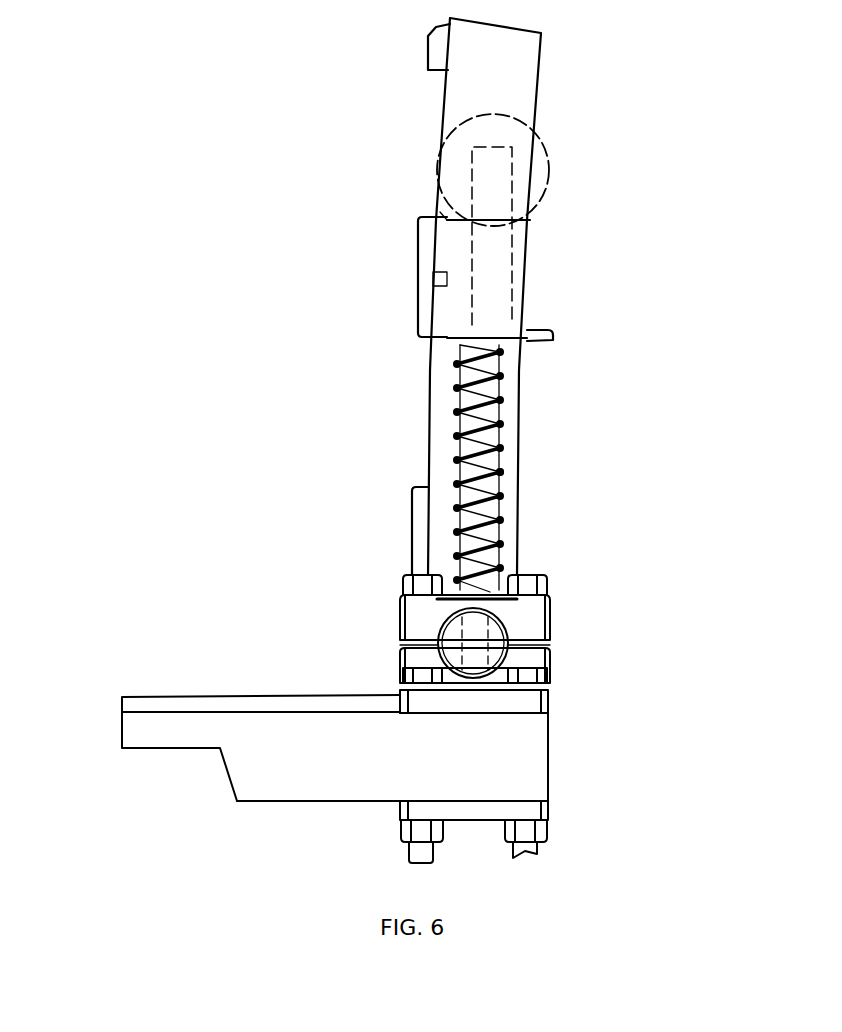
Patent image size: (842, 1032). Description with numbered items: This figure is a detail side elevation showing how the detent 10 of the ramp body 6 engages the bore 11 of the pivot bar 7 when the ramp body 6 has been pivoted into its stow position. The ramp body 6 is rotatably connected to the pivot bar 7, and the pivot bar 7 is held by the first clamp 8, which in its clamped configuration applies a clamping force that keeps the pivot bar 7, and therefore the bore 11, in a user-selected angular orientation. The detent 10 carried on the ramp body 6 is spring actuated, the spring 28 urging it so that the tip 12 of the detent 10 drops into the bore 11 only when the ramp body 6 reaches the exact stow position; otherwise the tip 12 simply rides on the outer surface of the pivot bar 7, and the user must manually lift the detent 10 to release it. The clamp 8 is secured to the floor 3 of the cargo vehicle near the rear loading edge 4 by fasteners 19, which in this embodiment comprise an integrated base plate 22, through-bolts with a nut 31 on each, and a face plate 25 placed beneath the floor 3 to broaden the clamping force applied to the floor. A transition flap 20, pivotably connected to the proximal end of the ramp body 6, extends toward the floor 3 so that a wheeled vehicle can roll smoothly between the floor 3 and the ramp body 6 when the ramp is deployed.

The floor 3 is at (245, 797).
The rear loading edge 4 is at (484, 758).
The ramp body 6 is at (614, 296).
The pivot bar 7 is at (368, 632).
The first clamp 8 is at (344, 623).
The detent 10 is at (503, 432).
The bore 11 is at (362, 584).
The tip of detent 12 is at (557, 613).
The fasteners 19 is at (555, 665).
The transition flap 20 is at (261, 684).
The integrated base plate 22 is at (555, 704).
The face plate 25 is at (567, 818).
The spring 28 is at (503, 468).
The nut 31 is at (549, 843).